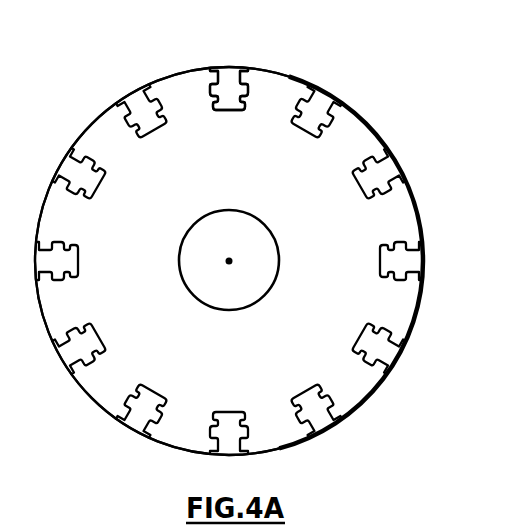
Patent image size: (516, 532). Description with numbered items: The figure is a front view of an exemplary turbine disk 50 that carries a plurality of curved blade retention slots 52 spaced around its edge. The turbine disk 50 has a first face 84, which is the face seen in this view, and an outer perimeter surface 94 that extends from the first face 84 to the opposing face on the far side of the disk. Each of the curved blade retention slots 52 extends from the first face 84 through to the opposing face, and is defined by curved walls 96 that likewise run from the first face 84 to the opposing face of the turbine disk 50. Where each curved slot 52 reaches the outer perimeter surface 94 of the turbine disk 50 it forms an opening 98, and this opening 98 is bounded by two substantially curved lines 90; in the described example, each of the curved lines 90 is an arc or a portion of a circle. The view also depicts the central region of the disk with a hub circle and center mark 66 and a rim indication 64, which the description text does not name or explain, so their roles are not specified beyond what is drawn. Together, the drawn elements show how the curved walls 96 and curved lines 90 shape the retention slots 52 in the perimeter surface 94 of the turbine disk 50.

The turbine disk 50 is at (386, 55).
The curved blade retention slots 52 is at (228, 88).
The curved walls 96 is at (249, 96).
The first face 84 is at (350, 143).
The curved lines 90 is at (385, 151).
The rim 64 is at (418, 312).
The outer perimeter surface 94 is at (367, 401).
The opening 98 is at (320, 420).
The axis of rotation 66 is at (229, 261).